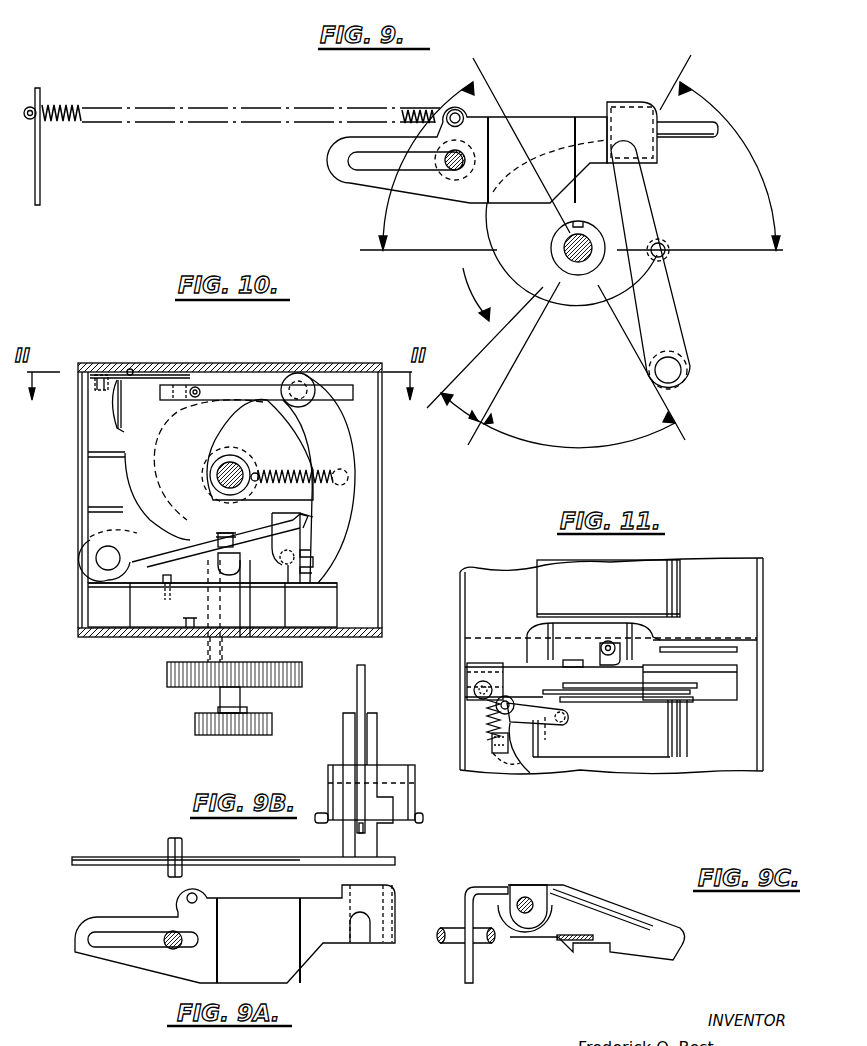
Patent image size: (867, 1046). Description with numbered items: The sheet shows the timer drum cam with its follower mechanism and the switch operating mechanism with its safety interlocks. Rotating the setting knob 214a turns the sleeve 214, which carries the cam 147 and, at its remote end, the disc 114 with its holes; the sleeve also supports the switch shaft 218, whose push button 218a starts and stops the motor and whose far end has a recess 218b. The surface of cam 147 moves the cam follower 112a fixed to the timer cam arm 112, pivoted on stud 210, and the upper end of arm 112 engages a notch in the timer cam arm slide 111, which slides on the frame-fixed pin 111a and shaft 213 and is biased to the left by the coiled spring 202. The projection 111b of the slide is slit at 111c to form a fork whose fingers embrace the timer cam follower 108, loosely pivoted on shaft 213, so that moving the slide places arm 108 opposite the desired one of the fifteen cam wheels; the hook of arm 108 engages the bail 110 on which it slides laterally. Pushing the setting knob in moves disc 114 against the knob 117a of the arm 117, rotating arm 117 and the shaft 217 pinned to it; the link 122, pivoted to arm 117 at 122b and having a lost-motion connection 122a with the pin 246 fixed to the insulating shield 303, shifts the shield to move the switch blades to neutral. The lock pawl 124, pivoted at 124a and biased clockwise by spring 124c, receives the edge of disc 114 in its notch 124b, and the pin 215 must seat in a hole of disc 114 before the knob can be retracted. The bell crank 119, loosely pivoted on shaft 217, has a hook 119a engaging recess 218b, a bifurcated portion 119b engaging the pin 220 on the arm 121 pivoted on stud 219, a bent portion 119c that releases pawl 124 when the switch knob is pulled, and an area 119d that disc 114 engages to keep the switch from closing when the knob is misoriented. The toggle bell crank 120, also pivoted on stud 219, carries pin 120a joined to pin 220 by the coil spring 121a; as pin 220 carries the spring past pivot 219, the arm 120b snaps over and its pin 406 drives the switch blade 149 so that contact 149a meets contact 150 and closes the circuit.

In FIG. 9B, the timer cam follower 108 is at (362, 693).
In FIG. 9C, the timer cam follower 108 is at (648, 919).
In FIG. 9, the bail 110 is at (632, 132).
In FIG. 9B, the bail 110 is at (388, 769).
In FIG. 9C, the bail 110 is at (560, 941).
In FIG. 9, the timer cam arm slide 111 is at (548, 117).
In FIG. 9B, the timer cam arm slide 111 is at (255, 861).
In FIG. 9A, the timer cam arm slide 111 is at (270, 942).
In FIG. 9, the pin 111a is at (450, 172).
In FIG. 9B, the pin 111a is at (168, 849).
In FIG. 9A, the pin 111a is at (170, 935).
In FIG. 9C, the pin 111a is at (458, 934).
In FIG. 9B, the projection 111b is at (370, 751).
In FIG. 9A, the projection 111b is at (360, 966).
In FIG. 9C, the projection 111b is at (613, 911).
In FIG. 9B, the slit 111c is at (355, 733).
In FIG. 9, the timer cam arm 112 is at (638, 300).
In FIG. 9, the cam follower 112a is at (665, 253).
In FIG. 10, the disc 114 is at (196, 604).
In FIG. 10, the release arm 117 is at (220, 533).
In FIG. 10, the knob 117a is at (236, 580).
In FIG. 10, the bell crank 119 is at (95, 507).
In FIG. 11, the bell crank 119 is at (513, 663).
In FIG. 11, the hook portion 119a is at (625, 649).
In FIG. 11, the bifurcated portion 119b is at (470, 672).
In FIG. 10, the bent portion 119c is at (308, 520).
In FIG. 11, the bent portion 119c is at (690, 653).
In FIG. 10, the area 119d is at (155, 578).
In FIG. 10, the toggle operating bell crank 120 is at (152, 385).
In FIG. 11, the toggle operating bell crank 120 is at (530, 765).
In FIG. 10, the pin 120a is at (120, 426).
In FIG. 11, the pin 120a is at (492, 741).
In FIG. 11, the arm 120b is at (546, 718).
In FIG. 10, the arm 121 is at (95, 375).
In FIG. 11, the coil spring 121a is at (488, 718).
In FIG. 10, the release arm link 122 is at (275, 528).
In FIG. 10, the lost-motion connection 122a is at (283, 548).
In FIG. 10, the pivot end 122b is at (296, 584).
In FIG. 10, the lock pawl 124 is at (353, 463).
In FIG. 10, the pivot 124a is at (311, 363).
In FIG. 10, the notch 124b is at (313, 560).
In FIG. 10, the spring 124c is at (348, 477).
In FIG. 9, the cam 147 is at (580, 333).
In FIG. 10, the switch blade 149 is at (228, 385).
In FIG. 11, the switch blade 149 is at (646, 700).
In FIG. 10, the contact 149a is at (195, 402).
In FIG. 11, the contact 149a is at (580, 689).
In FIG. 11, the contact 150 is at (586, 683).
In FIG. 9, the coiled spring 202 is at (410, 110).
In FIG. 9, the stud 210 is at (690, 371).
In FIG. 9, the shaft 213 is at (688, 122).
In FIG. 9B, the shaft 213 is at (418, 821).
In FIG. 9C, the shaft 213 is at (533, 909).
In FIG. 10, the sleeve 214 is at (213, 648).
In FIG. 10, the setting knob 214a is at (177, 674).
In FIG. 10, the pin 215 is at (171, 584).
In FIG. 10, the shaft 217 is at (96, 558).
In FIG. 10, the switch shaft 218 is at (230, 698).
In FIG. 10, the push button 218a is at (213, 726).
In FIG. 10, the recess portion 218b is at (183, 579).
In FIG. 11, the recess portion 218b is at (611, 645).
In FIG. 10, the stud 219 is at (131, 369).
In FIG. 11, the stud 219 is at (511, 700).
In FIG. 10, the pin 220 is at (95, 383).
In FIG. 11, the pin 220 is at (474, 690).
In FIG. 10, the pin 246 is at (278, 466).
In FIG. 10, the insulating shield 303 is at (265, 405).
In FIG. 10, the pin 406 is at (182, 385).
In FIG. 11, the pin 406 is at (567, 721).